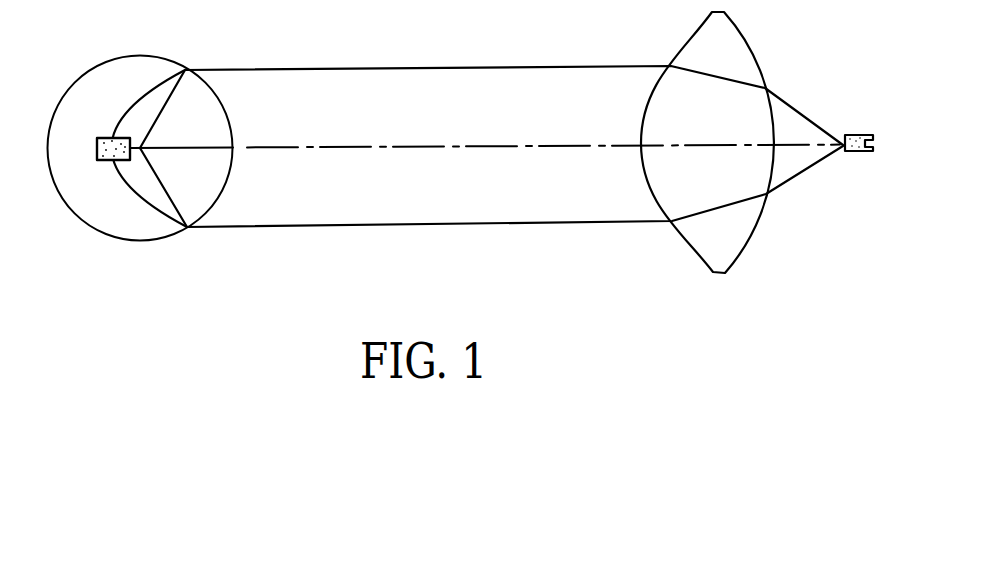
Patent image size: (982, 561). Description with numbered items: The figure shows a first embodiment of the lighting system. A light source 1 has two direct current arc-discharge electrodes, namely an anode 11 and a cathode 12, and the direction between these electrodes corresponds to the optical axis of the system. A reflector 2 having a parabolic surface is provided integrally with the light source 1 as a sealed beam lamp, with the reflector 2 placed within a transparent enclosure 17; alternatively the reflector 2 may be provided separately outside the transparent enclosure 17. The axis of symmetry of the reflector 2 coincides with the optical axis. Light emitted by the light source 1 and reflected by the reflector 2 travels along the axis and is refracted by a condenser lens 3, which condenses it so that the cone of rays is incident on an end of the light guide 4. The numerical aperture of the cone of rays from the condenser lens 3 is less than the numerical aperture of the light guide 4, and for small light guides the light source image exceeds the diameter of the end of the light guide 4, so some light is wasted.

The light source 1 is at (111, 170).
The reflector 2 is at (150, 206).
The condenser lens 3 is at (689, 245).
The light guide 4 is at (858, 152).
The anode 11 is at (97, 146).
The cathode 12 is at (193, 146).
The transparent enclosure 17 is at (184, 229).